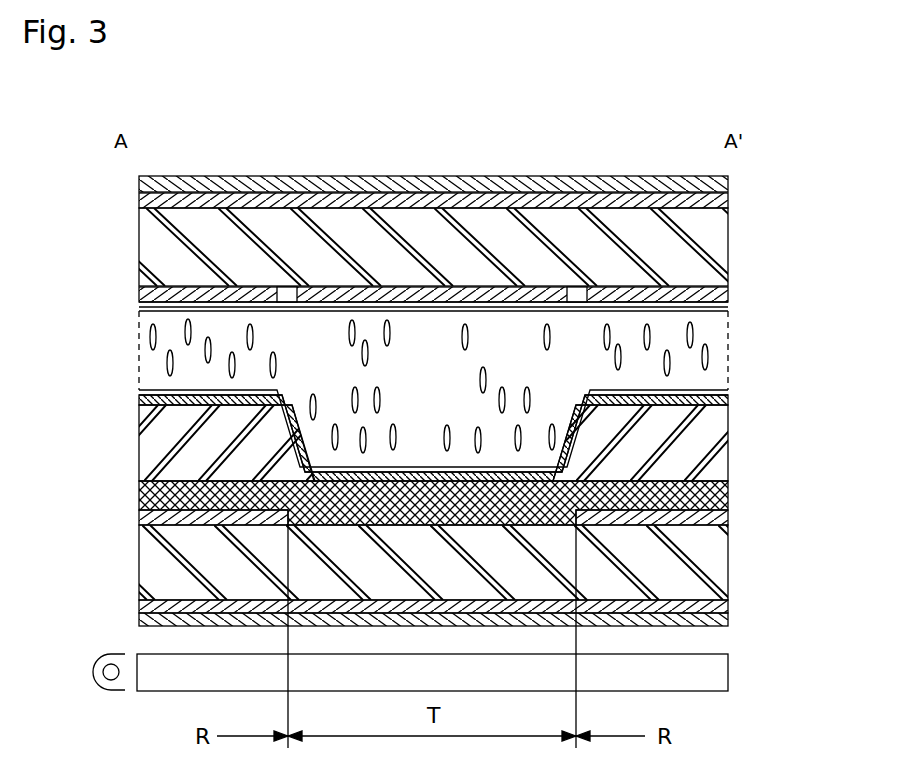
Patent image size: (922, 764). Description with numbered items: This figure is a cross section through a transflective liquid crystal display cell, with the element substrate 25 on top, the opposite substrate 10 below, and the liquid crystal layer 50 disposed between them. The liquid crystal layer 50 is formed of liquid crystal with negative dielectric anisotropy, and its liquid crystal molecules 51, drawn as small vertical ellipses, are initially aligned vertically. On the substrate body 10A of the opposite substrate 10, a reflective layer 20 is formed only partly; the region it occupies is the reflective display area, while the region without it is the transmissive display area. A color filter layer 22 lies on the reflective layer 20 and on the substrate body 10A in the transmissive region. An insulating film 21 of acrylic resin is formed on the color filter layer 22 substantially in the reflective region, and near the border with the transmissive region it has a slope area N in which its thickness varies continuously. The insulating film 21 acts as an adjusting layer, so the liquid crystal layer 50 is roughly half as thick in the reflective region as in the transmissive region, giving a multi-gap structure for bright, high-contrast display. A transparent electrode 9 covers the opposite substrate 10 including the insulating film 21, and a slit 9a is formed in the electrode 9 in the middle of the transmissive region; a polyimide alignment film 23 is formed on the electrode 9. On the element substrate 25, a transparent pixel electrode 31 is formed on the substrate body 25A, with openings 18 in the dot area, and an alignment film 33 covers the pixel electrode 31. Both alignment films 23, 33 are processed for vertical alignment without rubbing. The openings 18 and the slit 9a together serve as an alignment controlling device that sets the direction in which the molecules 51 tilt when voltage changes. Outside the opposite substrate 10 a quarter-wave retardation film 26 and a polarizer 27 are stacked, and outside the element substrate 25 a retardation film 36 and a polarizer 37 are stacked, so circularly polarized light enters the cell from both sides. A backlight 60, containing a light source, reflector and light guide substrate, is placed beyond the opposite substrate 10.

The element substrate 25 is at (133, 176).
The polarizer 37 is at (728, 181).
The retardation film 36 is at (728, 200).
The substrate body 25A is at (716, 233).
The pixel electrode 31 is at (728, 294).
The openings 18 is at (287, 303).
The alignment film 33 is at (728, 308).
The liquid crystal layer 50 is at (720, 320).
The liquid crystal molecules 51 is at (708, 357).
The opposite substrate 10 is at (133, 390).
The alignment film 23 is at (728, 390).
The slit 9a is at (437, 466).
The slope area N is at (563, 411).
The electrode 9 is at (728, 400).
The insulating film 21 is at (713, 443).
The color filter layer 22 is at (728, 495).
The reflective layer 20 is at (728, 518).
The substrate body 10A is at (715, 565).
The retardation film 26 is at (728, 606).
The polarizer 27 is at (728, 620).
The backlight 60 is at (715, 672).